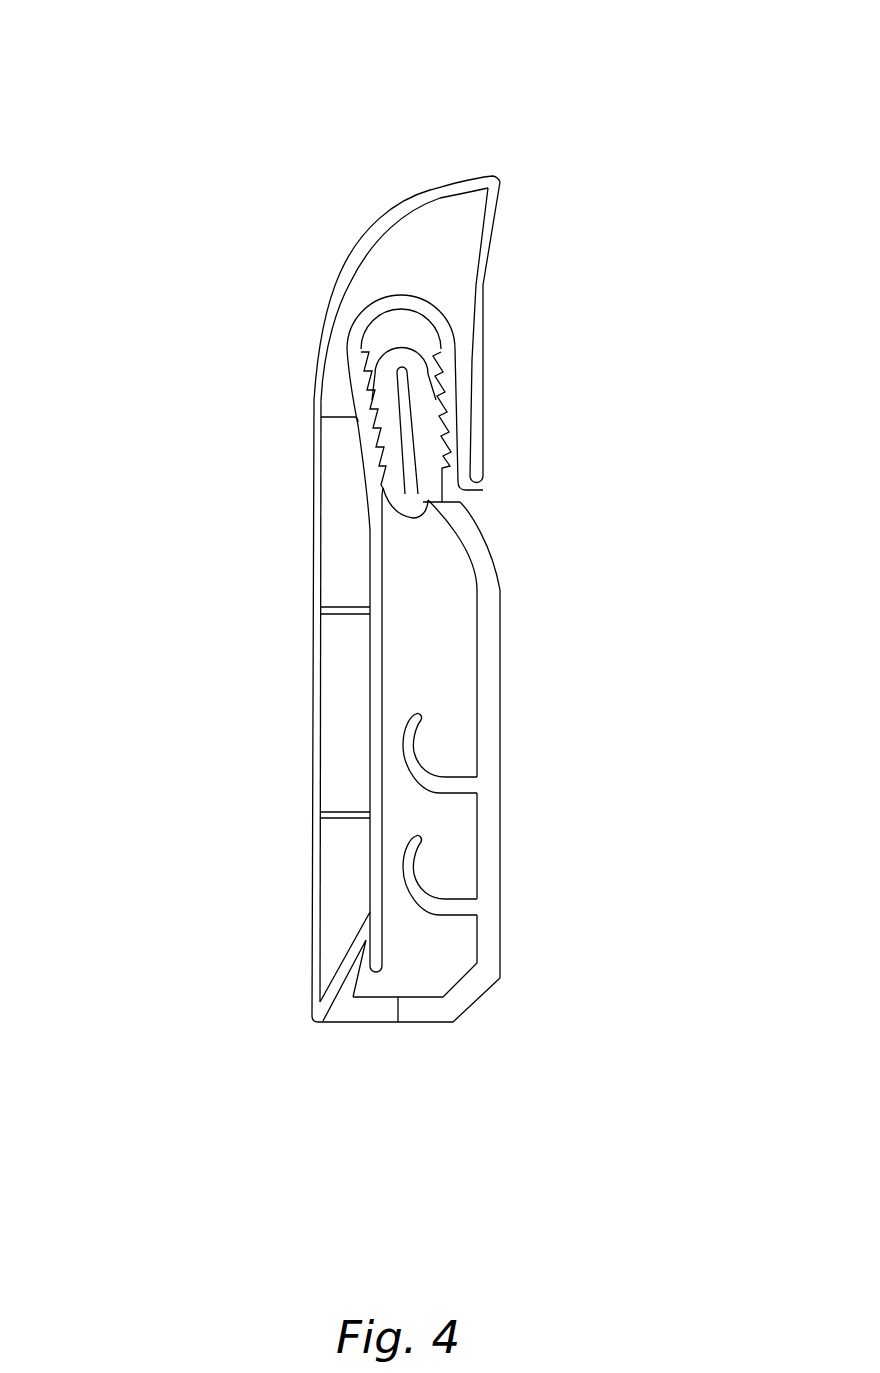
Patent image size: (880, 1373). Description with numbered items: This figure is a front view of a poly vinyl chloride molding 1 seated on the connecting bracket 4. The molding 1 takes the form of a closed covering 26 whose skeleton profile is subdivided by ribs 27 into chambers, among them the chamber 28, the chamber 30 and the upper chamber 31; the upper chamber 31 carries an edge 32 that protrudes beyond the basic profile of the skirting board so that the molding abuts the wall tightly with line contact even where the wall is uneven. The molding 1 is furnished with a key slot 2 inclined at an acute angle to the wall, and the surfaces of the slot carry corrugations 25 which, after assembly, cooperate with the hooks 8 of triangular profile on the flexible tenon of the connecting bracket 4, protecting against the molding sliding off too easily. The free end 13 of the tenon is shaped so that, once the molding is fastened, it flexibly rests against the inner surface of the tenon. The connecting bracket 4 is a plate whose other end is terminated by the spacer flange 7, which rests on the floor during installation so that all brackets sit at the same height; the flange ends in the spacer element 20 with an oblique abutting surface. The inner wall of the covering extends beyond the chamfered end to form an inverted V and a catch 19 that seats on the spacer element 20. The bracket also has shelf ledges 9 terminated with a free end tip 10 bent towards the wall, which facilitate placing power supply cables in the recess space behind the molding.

The molding 1 is at (318, 438).
The key slot 2 is at (399, 332).
The connecting bracket 4 is at (488, 700).
The spacer flange 7 is at (410, 1010).
The hooks 8 is at (442, 458).
The shelf ledges 9 is at (453, 787).
The free end tip 10 is at (420, 720).
The free end of the elastic tenon 13 is at (413, 506).
The catch 19 is at (388, 967).
The spacer element 20 is at (376, 963).
The corrugations 25 is at (362, 358).
The closed covering 26 is at (374, 695).
The ribs 27 is at (376, 603).
The chamber 28 is at (338, 872).
The chamber 30 is at (342, 545).
The upper chamber 31 is at (448, 233).
The edge 32 is at (500, 181).